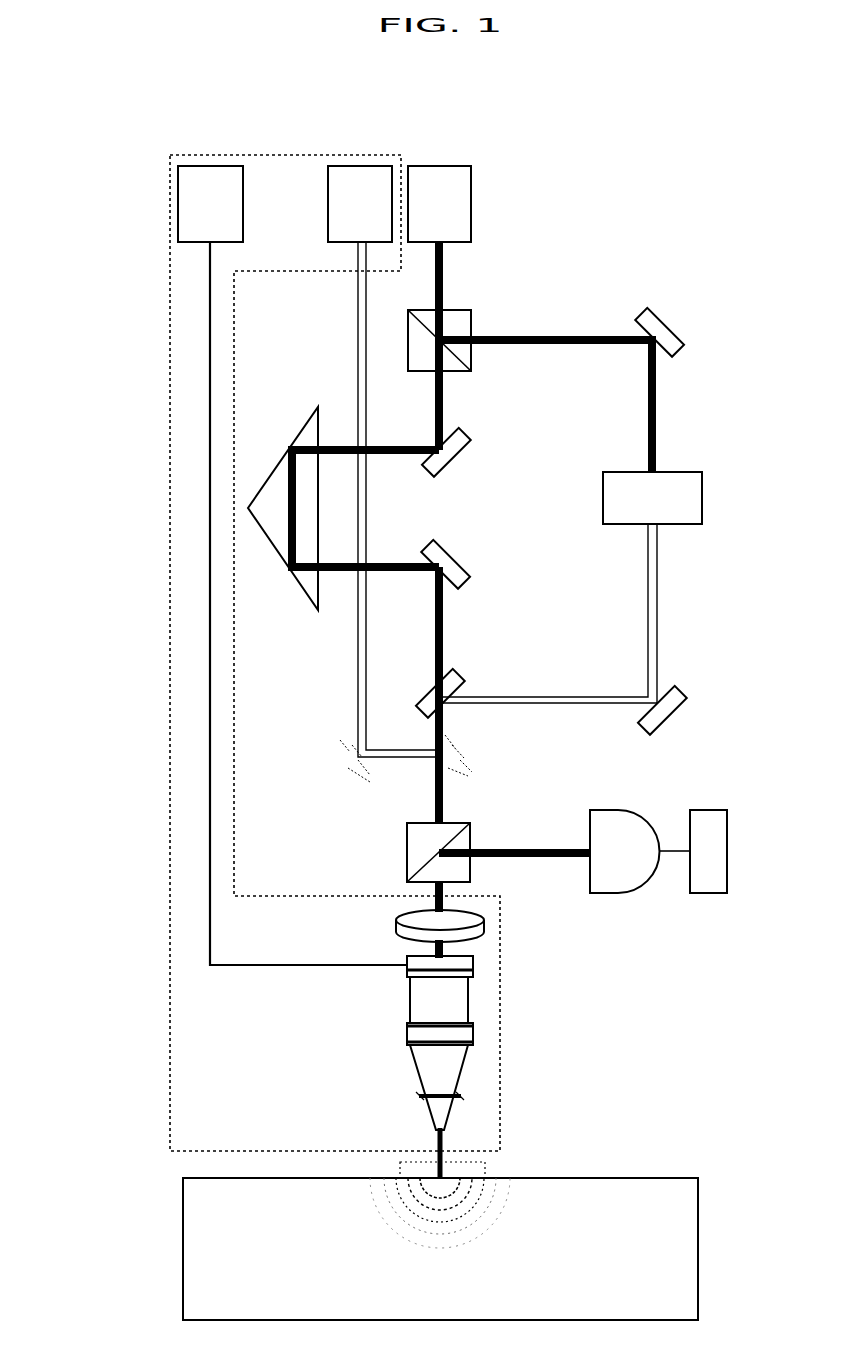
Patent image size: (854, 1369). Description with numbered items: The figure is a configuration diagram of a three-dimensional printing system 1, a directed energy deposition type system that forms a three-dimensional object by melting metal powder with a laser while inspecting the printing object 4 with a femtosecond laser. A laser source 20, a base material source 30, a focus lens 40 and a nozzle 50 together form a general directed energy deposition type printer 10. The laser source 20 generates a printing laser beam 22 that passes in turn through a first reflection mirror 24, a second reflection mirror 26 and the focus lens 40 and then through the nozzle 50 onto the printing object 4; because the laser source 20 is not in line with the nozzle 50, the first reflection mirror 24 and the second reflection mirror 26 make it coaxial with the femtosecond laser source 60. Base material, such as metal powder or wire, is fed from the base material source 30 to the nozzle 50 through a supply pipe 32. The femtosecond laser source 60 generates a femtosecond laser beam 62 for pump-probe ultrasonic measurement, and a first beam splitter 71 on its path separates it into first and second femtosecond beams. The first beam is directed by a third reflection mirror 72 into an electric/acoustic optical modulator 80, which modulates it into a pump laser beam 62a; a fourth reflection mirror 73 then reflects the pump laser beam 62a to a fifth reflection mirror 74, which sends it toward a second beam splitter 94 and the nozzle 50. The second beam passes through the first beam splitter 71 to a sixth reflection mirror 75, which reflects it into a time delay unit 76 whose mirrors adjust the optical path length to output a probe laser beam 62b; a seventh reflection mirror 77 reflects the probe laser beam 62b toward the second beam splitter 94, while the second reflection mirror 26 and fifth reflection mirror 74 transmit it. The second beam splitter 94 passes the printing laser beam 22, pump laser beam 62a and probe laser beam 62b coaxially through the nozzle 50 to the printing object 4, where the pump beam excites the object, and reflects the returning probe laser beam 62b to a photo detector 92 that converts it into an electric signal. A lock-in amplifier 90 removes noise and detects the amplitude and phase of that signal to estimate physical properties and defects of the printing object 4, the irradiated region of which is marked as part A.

The 3D printing system 1 is at (630, 126).
The 3D printer 10 is at (170, 271).
The base material source 30 is at (207, 165).
The laser source 20 is at (360, 165).
The femtosecond laser source 60 is at (437, 165).
The femtosecond laser beam 62 is at (444, 289).
The supply pipe 32 is at (212, 383).
The printing laser beam 22 is at (355, 335).
The first beam splitter 71 is at (472, 318).
The third reflection mirror 72 is at (640, 317).
The fourth reflection mirror 73 is at (664, 716).
The fifth reflection mirror 74 is at (464, 678).
The sixth reflection mirror 75 is at (462, 440).
The time delay unit 76 is at (302, 590).
The seventh reflection mirror 77 is at (470, 562).
The pump laser beam 62a is at (558, 704).
The probe laser beam 62b is at (378, 572).
The electric/acoustic optical modulator 80 is at (603, 500).
The first reflection mirror 24 is at (345, 752).
The second reflection mirror 26 is at (452, 740).
The second beam splitter 94 is at (407, 853).
The focus lens 40 is at (485, 926).
The nozzle 50 is at (473, 1033).
The photo detector 92 is at (612, 893).
The lock-in amplifier 90 is at (707, 893).
The part A is at (483, 1176).
The printing object 4 is at (683, 1247).